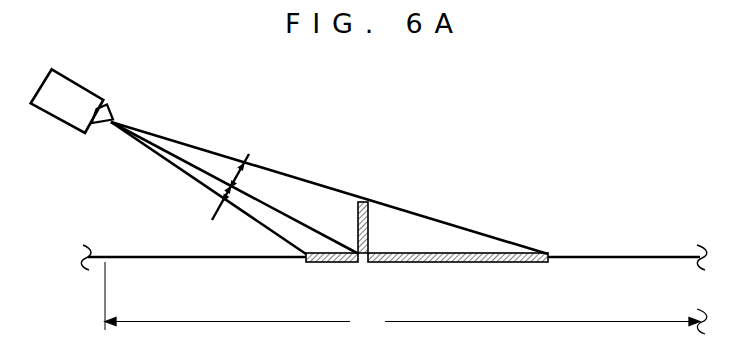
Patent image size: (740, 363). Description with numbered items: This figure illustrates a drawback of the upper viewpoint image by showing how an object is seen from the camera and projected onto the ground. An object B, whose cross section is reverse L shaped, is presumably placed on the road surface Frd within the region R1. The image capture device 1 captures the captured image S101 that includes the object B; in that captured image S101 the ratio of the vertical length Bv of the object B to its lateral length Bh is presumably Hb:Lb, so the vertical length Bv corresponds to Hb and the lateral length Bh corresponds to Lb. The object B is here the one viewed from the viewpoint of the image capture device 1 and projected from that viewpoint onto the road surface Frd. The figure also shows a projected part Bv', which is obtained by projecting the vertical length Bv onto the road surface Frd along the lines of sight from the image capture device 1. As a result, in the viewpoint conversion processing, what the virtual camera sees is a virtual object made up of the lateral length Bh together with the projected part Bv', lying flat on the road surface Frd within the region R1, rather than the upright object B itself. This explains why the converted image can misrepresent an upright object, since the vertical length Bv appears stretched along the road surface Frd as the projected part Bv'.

The image capture device 1 is at (78, 85).
The object B is at (343, 217).
The captured image S101 is at (215, 211).
The lateral length ratio value Lb is at (252, 172).
The vertical length ratio value Hb is at (231, 207).
The vertical length Bv is at (392, 217).
The lateral length Bh is at (333, 262).
The projected part Bv' is at (458, 282).
The road surface Frd is at (573, 256).
The region R1 is at (406, 298).